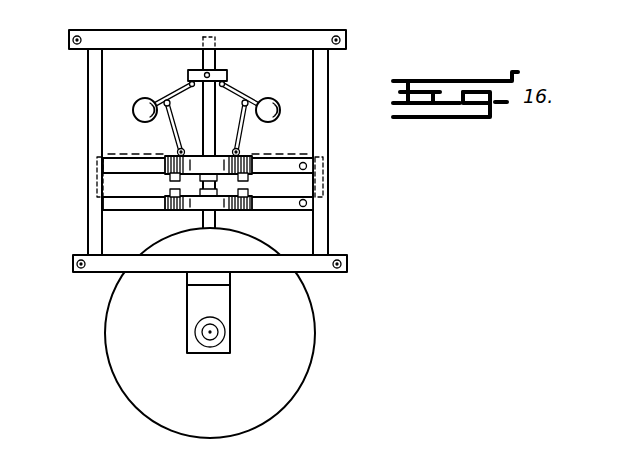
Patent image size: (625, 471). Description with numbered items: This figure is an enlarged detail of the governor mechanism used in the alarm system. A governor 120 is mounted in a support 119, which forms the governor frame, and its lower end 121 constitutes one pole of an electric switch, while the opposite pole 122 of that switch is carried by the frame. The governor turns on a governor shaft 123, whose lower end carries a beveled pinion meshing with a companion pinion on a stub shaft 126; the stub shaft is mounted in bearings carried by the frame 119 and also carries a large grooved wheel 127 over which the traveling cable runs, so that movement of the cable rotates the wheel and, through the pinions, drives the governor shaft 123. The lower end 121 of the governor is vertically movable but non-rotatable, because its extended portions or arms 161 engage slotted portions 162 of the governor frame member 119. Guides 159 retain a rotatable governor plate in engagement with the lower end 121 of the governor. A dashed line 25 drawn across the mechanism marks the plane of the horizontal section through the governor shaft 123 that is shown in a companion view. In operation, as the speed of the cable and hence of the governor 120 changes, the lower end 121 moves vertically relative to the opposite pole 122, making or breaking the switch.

The section line 25— 25 is at (86, 159).
The support 119 is at (323, 110).
The governor 120 is at (282, 87).
The lower end of governor 121 is at (170, 179).
The opposite pole of switch 122 is at (165, 197).
The governor shaft 123 is at (213, 218).
The stub shaft 126 is at (208, 335).
The large grooved wheel 127 is at (302, 358).
The guides 159 is at (167, 156).
The extended portions or arms 161 is at (277, 166).
The slotted portions 162 is at (332, 185).